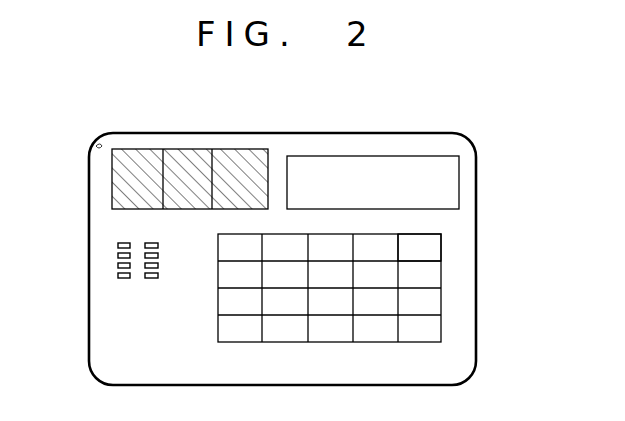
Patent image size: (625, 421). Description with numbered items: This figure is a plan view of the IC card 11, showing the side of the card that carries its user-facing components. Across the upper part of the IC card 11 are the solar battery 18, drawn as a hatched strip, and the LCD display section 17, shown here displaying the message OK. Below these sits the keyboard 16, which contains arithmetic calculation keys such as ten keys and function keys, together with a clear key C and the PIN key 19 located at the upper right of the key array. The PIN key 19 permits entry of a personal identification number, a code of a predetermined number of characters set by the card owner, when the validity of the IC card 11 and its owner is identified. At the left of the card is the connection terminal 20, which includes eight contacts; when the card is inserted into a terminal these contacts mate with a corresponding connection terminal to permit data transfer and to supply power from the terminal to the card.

The IC card 11 is at (155, 133).
The keyboard 16 is at (292, 344).
The LCD display section 17 is at (424, 156).
The solar battery 18 is at (243, 149).
The PIN key 19 is at (441, 242).
The connection terminal 20 is at (115, 263).